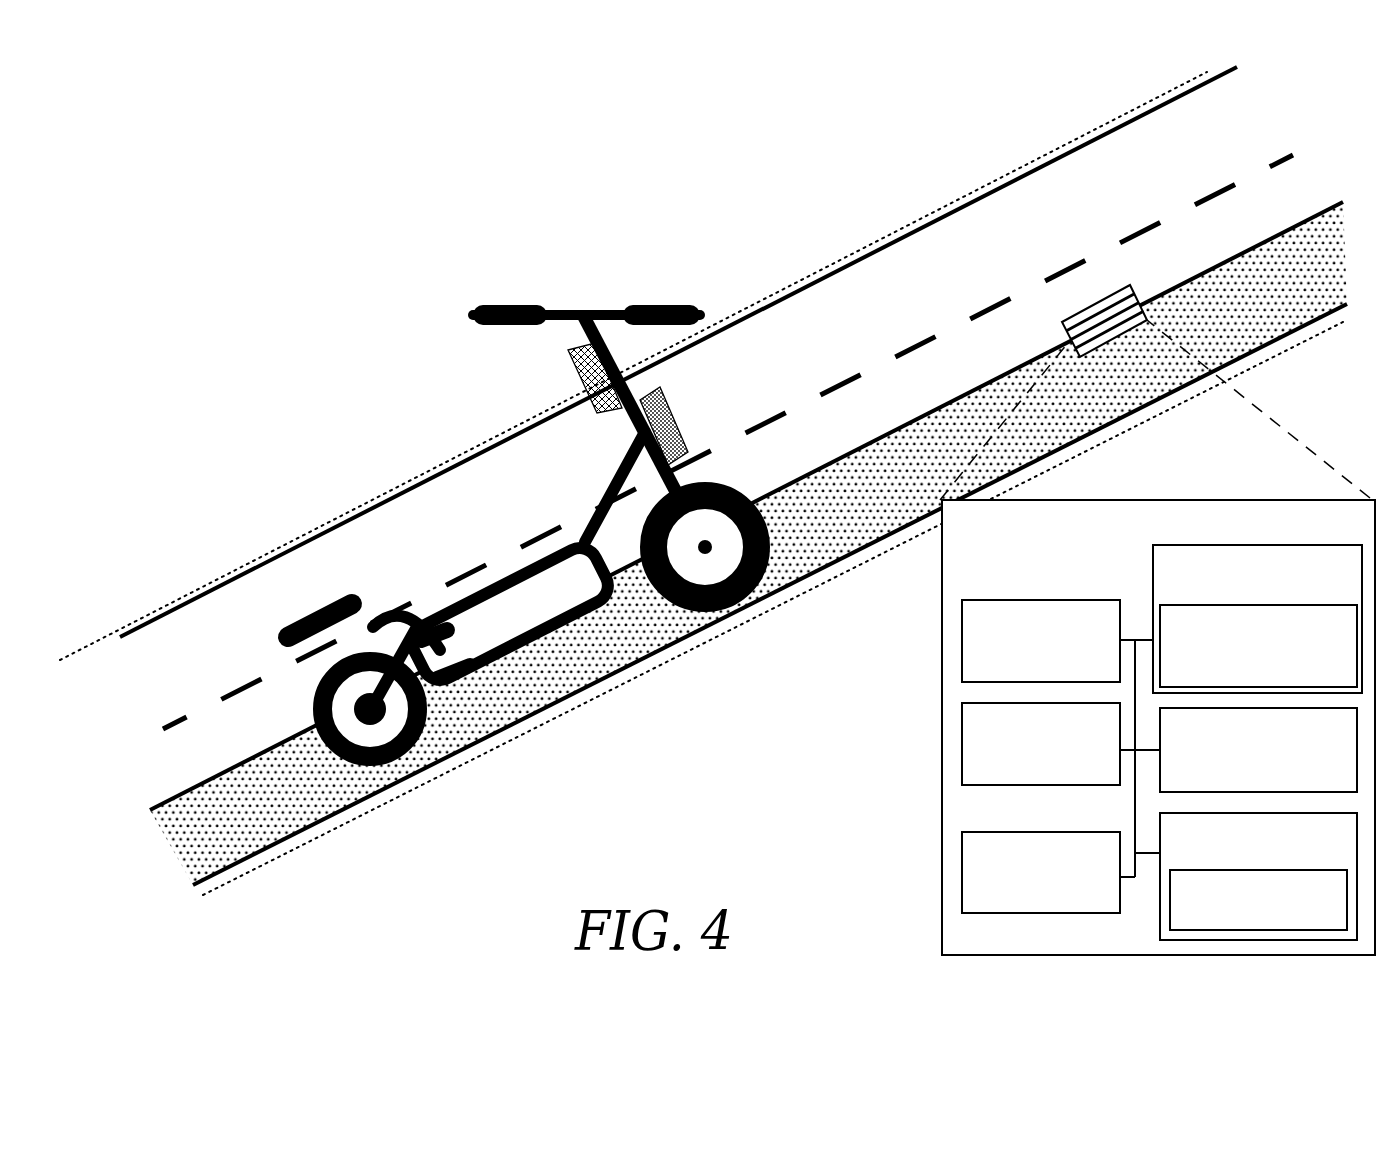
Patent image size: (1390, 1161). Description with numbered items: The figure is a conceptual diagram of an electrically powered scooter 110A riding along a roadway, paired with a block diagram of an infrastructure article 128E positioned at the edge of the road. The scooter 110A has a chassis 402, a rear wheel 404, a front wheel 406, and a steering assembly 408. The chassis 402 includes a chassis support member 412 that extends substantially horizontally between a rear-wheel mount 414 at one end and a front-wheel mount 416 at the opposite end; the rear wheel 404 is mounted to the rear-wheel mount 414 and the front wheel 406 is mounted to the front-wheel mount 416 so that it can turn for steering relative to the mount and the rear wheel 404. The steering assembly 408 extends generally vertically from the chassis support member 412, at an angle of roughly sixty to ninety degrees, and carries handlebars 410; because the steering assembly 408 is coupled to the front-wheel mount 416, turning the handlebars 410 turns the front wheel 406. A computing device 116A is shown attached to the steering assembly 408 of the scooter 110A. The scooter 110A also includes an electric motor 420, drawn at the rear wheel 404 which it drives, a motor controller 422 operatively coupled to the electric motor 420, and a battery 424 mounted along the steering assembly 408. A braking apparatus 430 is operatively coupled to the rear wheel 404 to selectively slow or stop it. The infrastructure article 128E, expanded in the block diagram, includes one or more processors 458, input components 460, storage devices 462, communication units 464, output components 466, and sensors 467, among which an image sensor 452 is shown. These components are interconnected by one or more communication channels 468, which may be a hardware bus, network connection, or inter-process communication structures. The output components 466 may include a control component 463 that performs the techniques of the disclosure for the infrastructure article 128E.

The electrically powered scooter 110A is at (280, 283).
The computing device 116A is at (578, 368).
The infrastructure article 128E is at (1100, 303).
The chassis 402 is at (587, 728).
The rear wheel 404 is at (313, 703).
The front wheel 406 is at (748, 490).
The steering assembly 408 is at (583, 310).
The handlebars 410 is at (670, 307).
The chassis support member 412 is at (530, 582).
The rear-wheel mount 414 is at (432, 627).
The front-wheel mount 416 is at (707, 528).
The electric motor 420 is at (369, 726).
The motor controller 422 is at (493, 624).
The battery 424 is at (670, 412).
The braking apparatus 430 is at (293, 617).
The image sensor 452 is at (1258, 900).
The processors 458 is at (1041, 641).
The input components 460 is at (1041, 744).
The storage devices 462 is at (1257, 619).
The control component 463 is at (1258, 646).
The communication units 464 is at (1258, 750).
The output components 466 is at (1041, 872).
The sensors 467 is at (1258, 876).
The communication channels 468 is at (1135, 617).